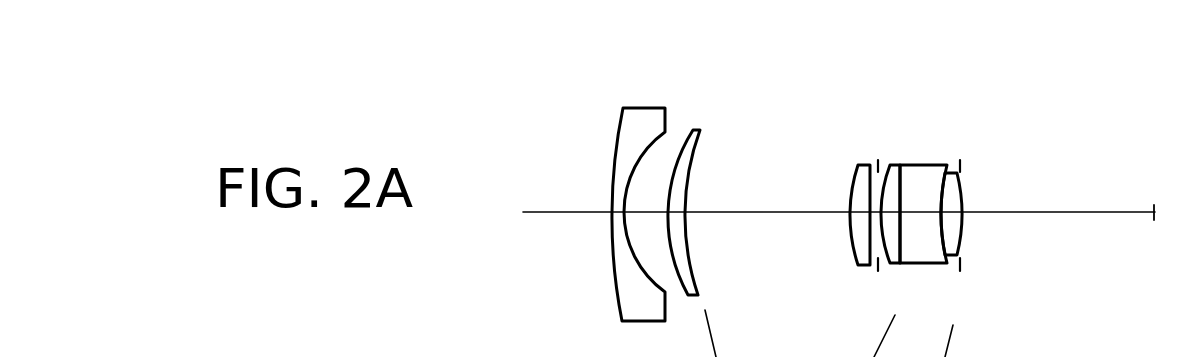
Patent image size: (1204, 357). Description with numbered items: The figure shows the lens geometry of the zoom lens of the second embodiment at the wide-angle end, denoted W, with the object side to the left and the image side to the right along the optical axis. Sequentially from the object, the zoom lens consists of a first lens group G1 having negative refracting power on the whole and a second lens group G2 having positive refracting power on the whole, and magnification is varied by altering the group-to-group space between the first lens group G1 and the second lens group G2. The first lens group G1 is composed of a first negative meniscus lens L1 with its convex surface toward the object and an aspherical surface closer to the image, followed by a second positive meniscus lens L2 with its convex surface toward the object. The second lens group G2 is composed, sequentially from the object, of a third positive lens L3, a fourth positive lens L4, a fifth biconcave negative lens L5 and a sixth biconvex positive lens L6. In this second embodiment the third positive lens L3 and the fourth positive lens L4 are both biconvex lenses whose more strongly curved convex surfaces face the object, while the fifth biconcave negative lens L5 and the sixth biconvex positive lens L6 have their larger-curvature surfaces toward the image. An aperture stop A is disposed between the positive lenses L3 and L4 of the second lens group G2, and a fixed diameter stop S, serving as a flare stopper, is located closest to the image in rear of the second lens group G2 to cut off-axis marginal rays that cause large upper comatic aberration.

The first lens group G1 is at (728, 49).
The second lens group G2 is at (983, 69).
The first negative meniscus lens L1 is at (646, 107).
The second positive meniscus lens L2 is at (701, 128).
The third positive lens L3 is at (858, 164).
The fourth positive lens L4 is at (896, 164).
The fifth biconcave negative lens L5 is at (925, 164).
The sixth biconvex positive lens L6 is at (951, 171).
The aperture stop A is at (878, 158).
The fixed diameter stop S is at (968, 163).
The wide-angle end position W is at (1179, 214).